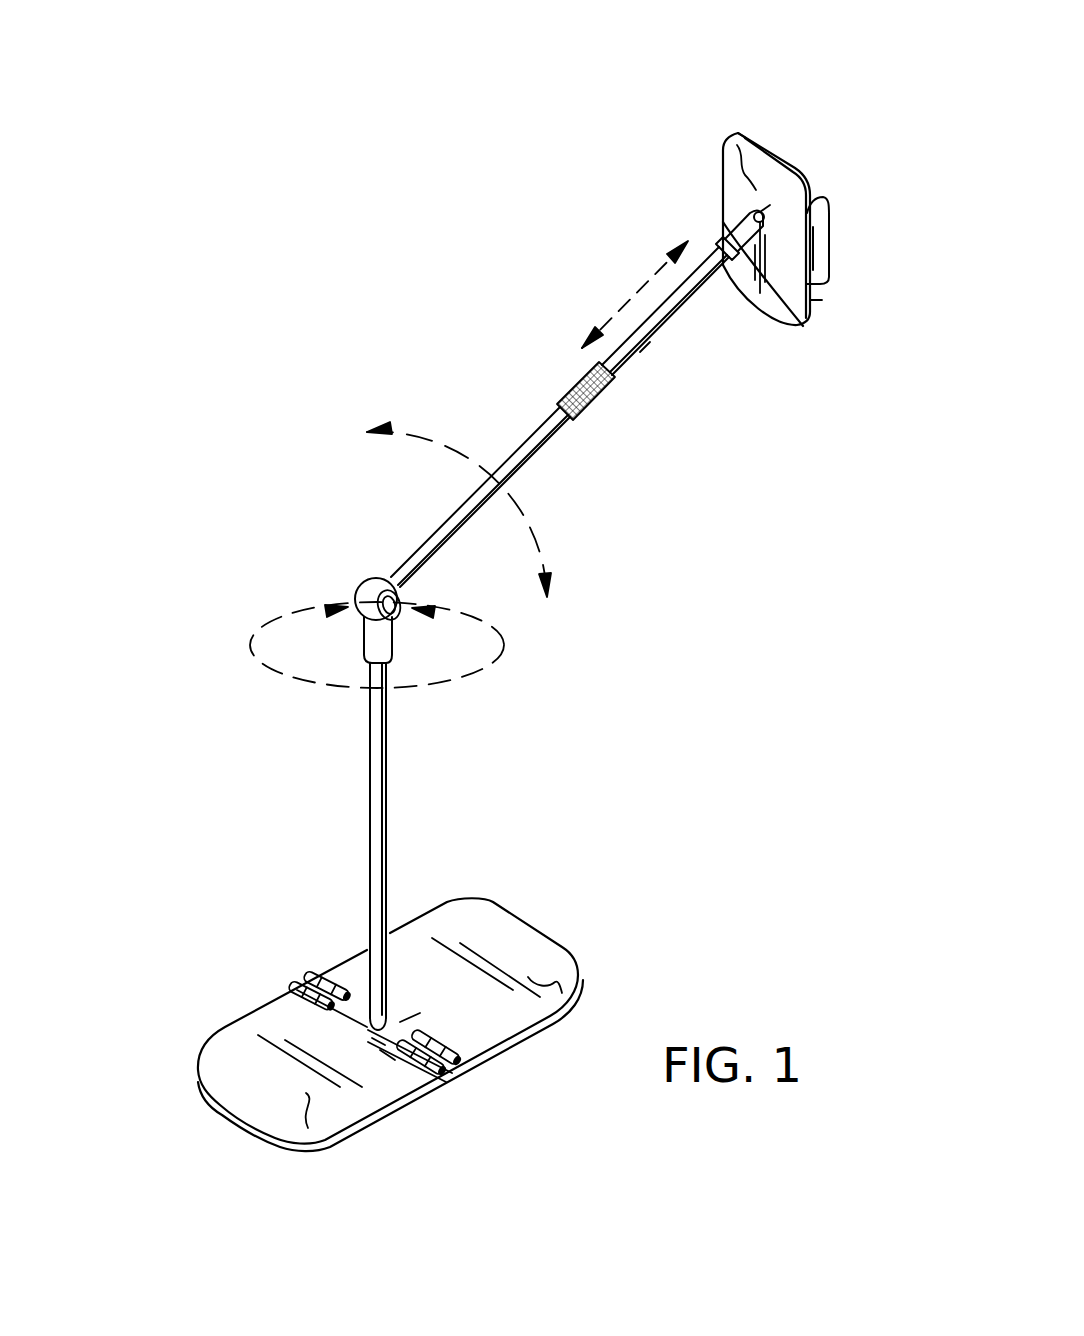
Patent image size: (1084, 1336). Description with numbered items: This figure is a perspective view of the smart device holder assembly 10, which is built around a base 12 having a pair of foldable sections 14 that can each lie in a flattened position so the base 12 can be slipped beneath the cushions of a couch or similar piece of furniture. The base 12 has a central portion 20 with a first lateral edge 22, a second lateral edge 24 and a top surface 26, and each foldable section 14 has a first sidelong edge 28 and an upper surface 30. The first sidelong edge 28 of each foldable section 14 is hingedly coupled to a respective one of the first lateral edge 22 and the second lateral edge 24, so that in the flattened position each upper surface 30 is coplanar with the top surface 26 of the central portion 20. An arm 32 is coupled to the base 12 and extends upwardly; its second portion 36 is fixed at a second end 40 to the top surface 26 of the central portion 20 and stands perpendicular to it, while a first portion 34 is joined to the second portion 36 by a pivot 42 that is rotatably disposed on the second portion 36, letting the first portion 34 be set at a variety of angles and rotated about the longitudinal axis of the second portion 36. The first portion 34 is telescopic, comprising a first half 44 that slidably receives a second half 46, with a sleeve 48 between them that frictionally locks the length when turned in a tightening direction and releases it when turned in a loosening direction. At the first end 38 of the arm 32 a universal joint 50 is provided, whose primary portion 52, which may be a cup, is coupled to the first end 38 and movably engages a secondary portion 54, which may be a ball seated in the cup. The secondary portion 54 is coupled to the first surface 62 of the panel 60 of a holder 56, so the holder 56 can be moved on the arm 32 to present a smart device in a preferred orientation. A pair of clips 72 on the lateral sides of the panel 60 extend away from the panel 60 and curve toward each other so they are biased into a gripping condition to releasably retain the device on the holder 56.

The smart device holder assembly 10 is at (362, 248).
The base 12 is at (252, 950).
The foldable sections 14 is at (244, 1053).
The central portion 20 is at (357, 1003).
The first lateral edge 22 is at (378, 1060).
The second lateral edge 24 is at (400, 1025).
The top surface 26 is at (380, 1022).
The first sidelong edge 28 is at (349, 1003).
The upper surface 30 is at (303, 1108).
The arm 32 is at (372, 542).
The first portion 34 is at (532, 427).
The second portion 36 is at (373, 733).
The first end 38 is at (722, 245).
The second end 40 is at (382, 1045).
The pivot 42 is at (366, 592).
The first half 44 is at (550, 495).
The second half 46 is at (655, 362).
The sleeve 48 is at (572, 380).
The universal joint 50 is at (766, 222).
The primary portion 52 is at (750, 305).
The secondary portion 54 is at (792, 178).
The holder 56 is at (860, 303).
The panel 60 is at (741, 133).
The first surface 62 is at (743, 173).
The clips 72 is at (830, 213).